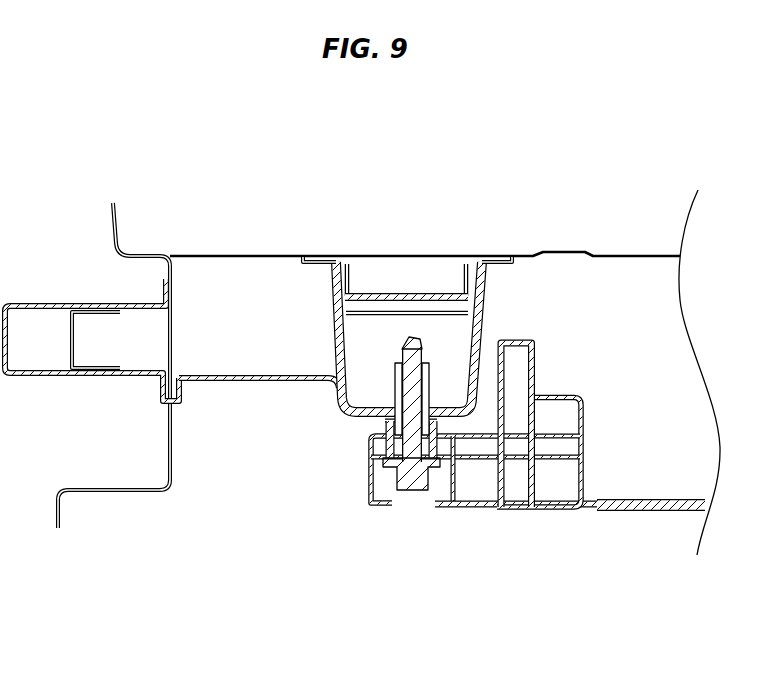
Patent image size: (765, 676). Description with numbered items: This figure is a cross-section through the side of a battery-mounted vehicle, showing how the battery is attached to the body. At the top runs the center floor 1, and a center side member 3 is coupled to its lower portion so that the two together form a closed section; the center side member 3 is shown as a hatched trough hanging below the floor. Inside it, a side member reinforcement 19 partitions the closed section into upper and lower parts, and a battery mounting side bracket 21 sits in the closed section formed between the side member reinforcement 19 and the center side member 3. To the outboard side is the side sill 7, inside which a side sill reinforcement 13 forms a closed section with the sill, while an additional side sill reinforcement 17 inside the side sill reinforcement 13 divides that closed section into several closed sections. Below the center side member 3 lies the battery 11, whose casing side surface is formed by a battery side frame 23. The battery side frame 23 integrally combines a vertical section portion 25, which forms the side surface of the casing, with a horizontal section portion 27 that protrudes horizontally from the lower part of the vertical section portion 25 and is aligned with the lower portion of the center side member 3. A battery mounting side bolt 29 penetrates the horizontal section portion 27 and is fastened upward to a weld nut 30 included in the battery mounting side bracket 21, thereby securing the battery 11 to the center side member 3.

The center floor 1 is at (240, 256).
The center side member 3 is at (340, 407).
The side sill 7 is at (117, 491).
The battery 11 is at (621, 518).
The side sill reinforcement 13 is at (45, 305).
The additional side sill reinforcement 17 is at (92, 372).
The side member reinforcement 19 is at (383, 295).
The battery mounting side bracket 21 is at (448, 340).
The battery side frame 23 is at (485, 494).
The vertical section portion 25 is at (502, 375).
The horizontal section portion 27 is at (480, 502).
The battery mounting side bolt 29 is at (410, 480).
The weld nut 30 is at (398, 390).